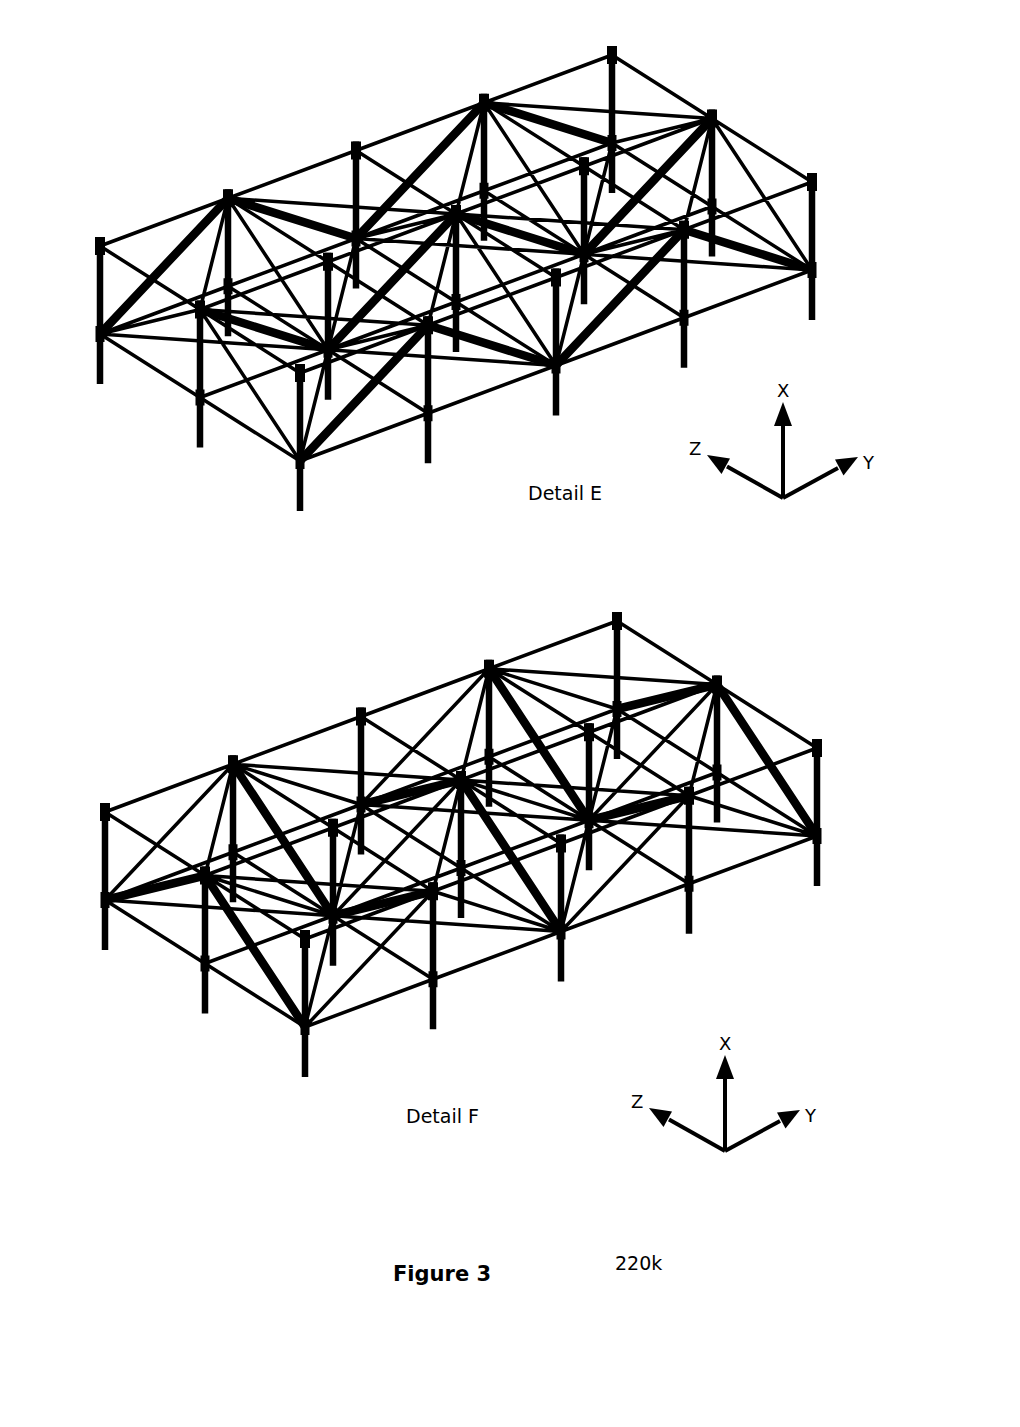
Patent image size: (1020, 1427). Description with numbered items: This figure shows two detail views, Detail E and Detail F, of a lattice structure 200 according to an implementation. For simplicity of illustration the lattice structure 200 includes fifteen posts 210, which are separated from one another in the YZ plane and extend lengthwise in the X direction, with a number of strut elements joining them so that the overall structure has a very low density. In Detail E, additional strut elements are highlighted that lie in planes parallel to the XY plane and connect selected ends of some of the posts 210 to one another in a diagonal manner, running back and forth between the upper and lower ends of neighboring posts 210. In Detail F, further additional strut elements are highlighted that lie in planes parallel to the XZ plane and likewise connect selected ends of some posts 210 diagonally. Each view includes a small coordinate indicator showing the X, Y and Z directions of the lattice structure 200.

The lattice structure 200 is at (338, 116).
The post 210 is at (97, 283).